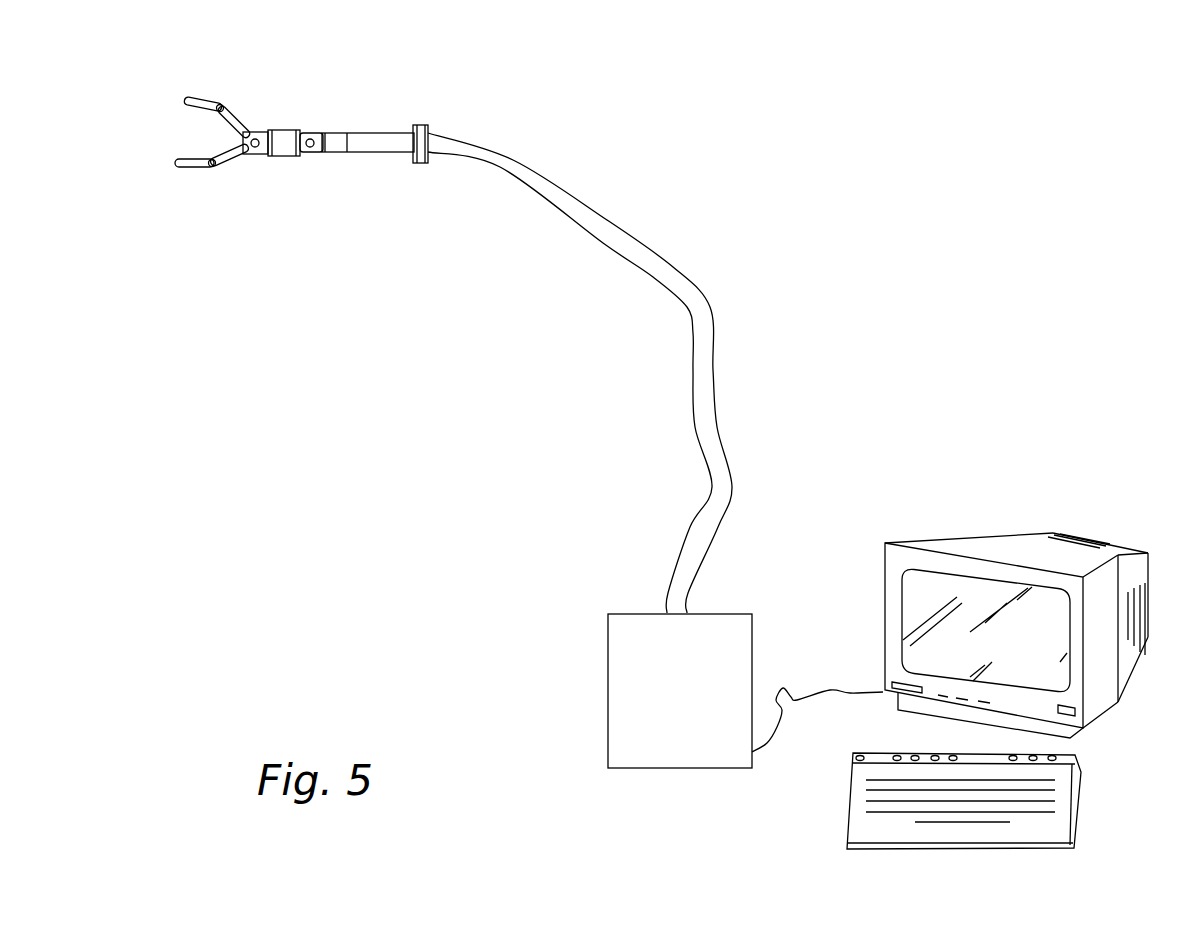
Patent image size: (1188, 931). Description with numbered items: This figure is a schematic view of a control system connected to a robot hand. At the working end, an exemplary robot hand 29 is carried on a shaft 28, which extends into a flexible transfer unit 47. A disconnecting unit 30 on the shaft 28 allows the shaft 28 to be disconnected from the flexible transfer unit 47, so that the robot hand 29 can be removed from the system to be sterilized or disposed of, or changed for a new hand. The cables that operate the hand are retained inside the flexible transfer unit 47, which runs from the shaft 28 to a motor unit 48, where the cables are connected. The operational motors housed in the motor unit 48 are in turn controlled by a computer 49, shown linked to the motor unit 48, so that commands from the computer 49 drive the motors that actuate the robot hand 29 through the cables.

The shaft 28 is at (367, 130).
The robot hand 29 is at (232, 112).
The disconnecting unit 30 is at (430, 128).
The flexible transfer unit 47 is at (703, 318).
The motor unit 48 is at (638, 613).
The computer 49 is at (990, 543).